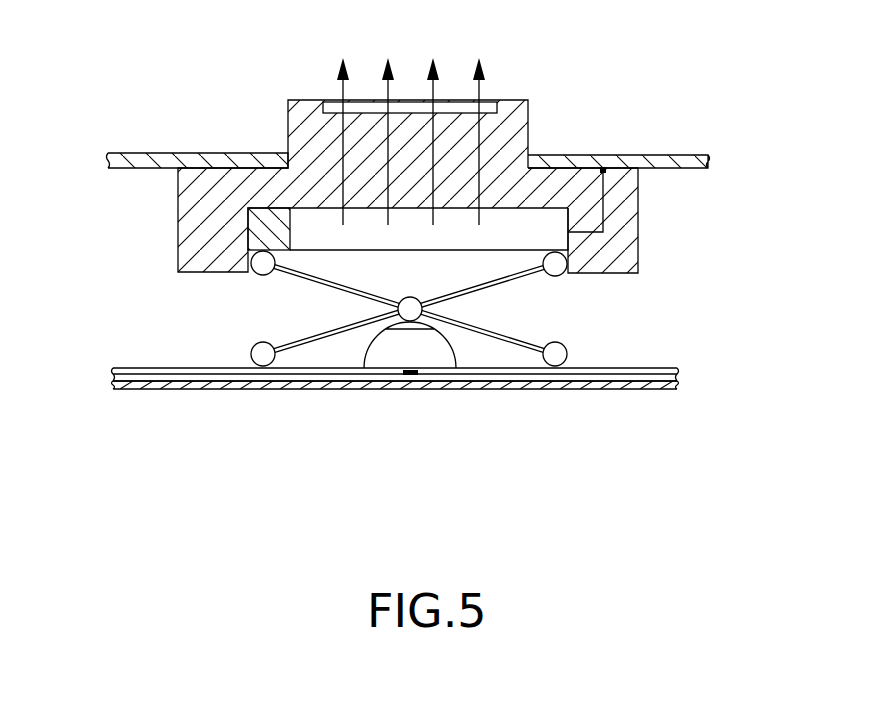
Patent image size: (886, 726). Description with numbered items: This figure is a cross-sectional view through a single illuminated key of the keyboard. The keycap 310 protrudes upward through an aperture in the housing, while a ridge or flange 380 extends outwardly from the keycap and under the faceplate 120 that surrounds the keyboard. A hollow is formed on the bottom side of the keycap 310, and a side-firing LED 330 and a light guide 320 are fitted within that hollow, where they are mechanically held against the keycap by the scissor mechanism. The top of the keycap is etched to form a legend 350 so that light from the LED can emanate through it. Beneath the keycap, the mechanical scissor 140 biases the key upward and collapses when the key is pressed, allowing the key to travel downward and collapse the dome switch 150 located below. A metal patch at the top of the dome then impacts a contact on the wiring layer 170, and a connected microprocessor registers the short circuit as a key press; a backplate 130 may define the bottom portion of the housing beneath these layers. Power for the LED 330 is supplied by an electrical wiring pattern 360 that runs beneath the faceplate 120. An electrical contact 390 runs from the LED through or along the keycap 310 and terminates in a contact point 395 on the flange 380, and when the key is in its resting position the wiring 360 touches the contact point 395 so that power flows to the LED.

The faceplate 120 is at (130, 153).
The backplate 130 is at (120, 388).
The mechanical scissor 140 is at (507, 283).
The dome switch 150 is at (368, 350).
The wiring layer 170 is at (113, 370).
The keycap 310 is at (529, 150).
The light guide 320 is at (558, 237).
The LED 330 is at (262, 228).
The legend 350 is at (484, 100).
The electrical wiring pattern 360 is at (672, 168).
The flange 380 is at (638, 183).
The electrical contact 390 is at (602, 193).
The contact point 395 is at (605, 168).